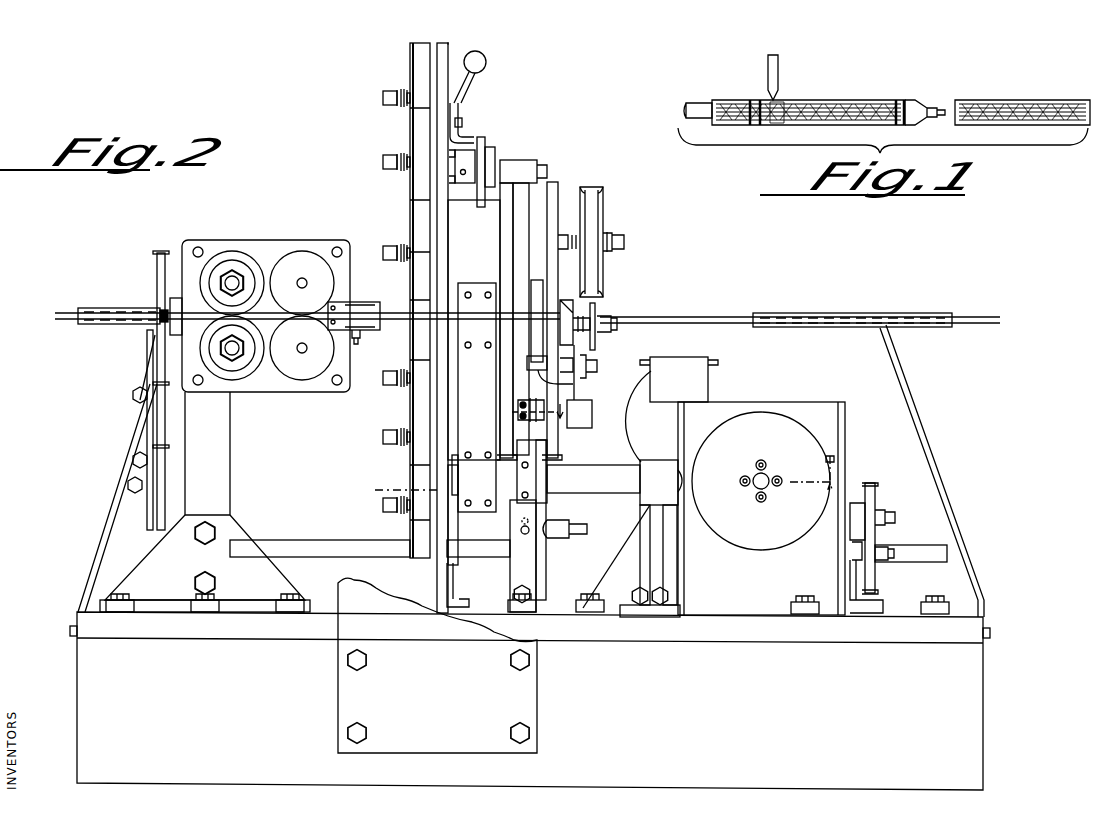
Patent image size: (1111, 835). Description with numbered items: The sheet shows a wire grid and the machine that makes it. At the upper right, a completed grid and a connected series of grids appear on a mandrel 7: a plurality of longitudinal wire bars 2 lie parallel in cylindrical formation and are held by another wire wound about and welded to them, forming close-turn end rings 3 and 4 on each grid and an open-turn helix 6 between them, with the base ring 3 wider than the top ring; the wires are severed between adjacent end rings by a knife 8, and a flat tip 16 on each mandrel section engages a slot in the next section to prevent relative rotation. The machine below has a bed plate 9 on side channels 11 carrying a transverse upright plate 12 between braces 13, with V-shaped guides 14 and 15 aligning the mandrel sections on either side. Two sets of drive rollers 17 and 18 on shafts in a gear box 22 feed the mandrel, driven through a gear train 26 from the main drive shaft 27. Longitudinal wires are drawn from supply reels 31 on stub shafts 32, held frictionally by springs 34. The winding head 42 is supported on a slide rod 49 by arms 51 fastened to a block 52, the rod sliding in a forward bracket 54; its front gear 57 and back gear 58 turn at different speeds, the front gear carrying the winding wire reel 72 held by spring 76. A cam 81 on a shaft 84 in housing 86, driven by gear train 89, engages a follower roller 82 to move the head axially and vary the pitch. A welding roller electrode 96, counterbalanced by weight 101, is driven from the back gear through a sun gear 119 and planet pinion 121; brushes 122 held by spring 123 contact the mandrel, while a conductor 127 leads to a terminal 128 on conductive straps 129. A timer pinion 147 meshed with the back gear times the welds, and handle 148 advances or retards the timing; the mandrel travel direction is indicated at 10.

In FIG. 1, the longitudinal wire bars 2 is at (836, 102).
In FIG. 1, the base end ring 3 is at (758, 100).
In FIG. 1, the top end ring 4 is at (787, 102).
In FIG. 1, the open-turn helix 6 is at (726, 100).
In FIG. 1, the mandrel 7 is at (700, 98).
In FIG. 2, the mandrel 7 is at (66, 312).
In FIG. 1, the knife 8 is at (778, 70).
In FIG. 1, the flat tip 16 is at (940, 100).
In FIG. 2, the bed plate 9 is at (955, 630).
In FIG. 2, the direction of travel 10 is at (399, 484).
In FIG. 2, the side channels 11 is at (975, 692).
In FIG. 2, the transverse upright plate 12 is at (448, 48).
In FIG. 2, the braces 13 is at (525, 693).
In FIG. 2, the V-shaped guide 14 is at (90, 330).
In FIG. 2, the V-shaped guide 15 is at (935, 320).
In FIG. 2, the rear drive rollers 17 is at (231, 252).
In FIG. 2, the front drive rollers 18 is at (304, 260).
In FIG. 2, the gear box 22 is at (270, 248).
In FIG. 2, the gear train 26 is at (147, 457).
In FIG. 2, the main drive shaft 27 is at (301, 540).
In FIG. 2, the supply reels 31 is at (418, 68).
In FIG. 2, the stub shafts 32 is at (383, 98).
In FIG. 2, the springs 34 is at (410, 110).
In FIG. 2, the winding head 42 is at (582, 153).
In FIG. 2, the slide rod 49 is at (598, 485).
In FIG. 2, the arms 51 is at (470, 408).
In FIG. 2, the block 52 is at (545, 476).
In FIG. 2, the forward bracket 54 is at (655, 566).
In FIG. 2, the front gear 57 is at (556, 190).
In FIG. 2, the back gear 58 is at (503, 230).
In FIG. 2, the winding wire reel 72 is at (605, 285).
In FIG. 2, the spring 76 is at (605, 240).
In FIG. 2, the cam 81 is at (765, 420).
In FIG. 2, the follower roller 82 is at (684, 478).
In FIG. 2, the cam shaft 84 is at (770, 492).
In FIG. 2, the cam housing 86 is at (820, 410).
In FIG. 2, the gear train 89 is at (870, 541).
In FIG. 2, the welding roller electrode 96 is at (598, 349).
In FIG. 2, the counterweight 101 is at (585, 418).
In FIG. 2, the sun gear 119 is at (532, 280).
In FIG. 2, the planet pinion 121 is at (576, 386).
In FIG. 2, the brushes 122 is at (392, 292).
In FIG. 2, the spring 123 is at (362, 338).
In FIG. 2, the conductor 127 is at (579, 540).
In FIG. 2, the terminal 128 is at (557, 525).
In FIG. 2, the conductive straps 129 is at (520, 478).
In FIG. 2, the timer pinion 147 is at (518, 158).
In FIG. 2, the handle 148 is at (465, 84).